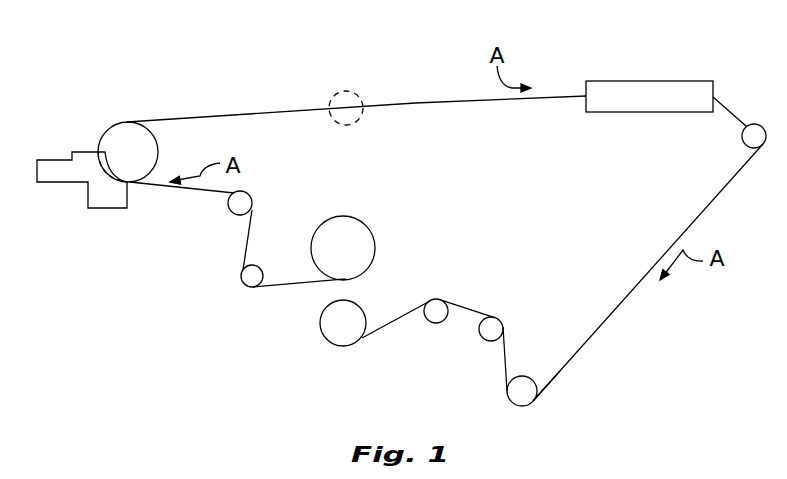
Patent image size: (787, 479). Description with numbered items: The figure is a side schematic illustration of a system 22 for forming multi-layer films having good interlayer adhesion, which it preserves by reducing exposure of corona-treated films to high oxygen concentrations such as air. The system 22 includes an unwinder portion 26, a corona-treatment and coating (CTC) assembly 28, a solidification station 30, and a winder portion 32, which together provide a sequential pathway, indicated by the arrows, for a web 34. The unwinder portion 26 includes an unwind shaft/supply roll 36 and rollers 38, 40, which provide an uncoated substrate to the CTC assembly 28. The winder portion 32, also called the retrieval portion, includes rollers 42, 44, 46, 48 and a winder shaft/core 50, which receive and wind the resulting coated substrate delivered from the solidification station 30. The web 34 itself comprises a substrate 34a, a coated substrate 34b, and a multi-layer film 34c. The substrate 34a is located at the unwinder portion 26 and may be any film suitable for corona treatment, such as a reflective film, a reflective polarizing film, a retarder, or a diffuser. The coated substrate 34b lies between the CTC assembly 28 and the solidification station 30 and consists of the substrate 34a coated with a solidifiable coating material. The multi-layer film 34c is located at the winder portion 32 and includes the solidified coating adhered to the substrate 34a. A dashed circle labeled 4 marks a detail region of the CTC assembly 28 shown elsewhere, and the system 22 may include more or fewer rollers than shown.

The system 22 is at (213, 60).
The corona-treatment and coating (CTC) assembly 28 is at (97, 125).
The detail region (FIG. 4) 4 is at (345, 93).
The web 34 is at (415, 101).
The substrate 34a is at (170, 190).
The coated substrate 34b is at (452, 105).
The multi-layer film 34c is at (618, 305).
The solidification station 30 is at (647, 81).
The roller 42 is at (742, 140).
The roller 40 is at (230, 210).
The roller 38 is at (262, 268).
The unwind shaft/supply roll 36 is at (375, 242).
The unwinder portion 26 is at (192, 266).
The winder shaft/core 50 is at (322, 340).
The roller 48 is at (437, 325).
The roller 46 is at (487, 337).
The roller 44 is at (525, 375).
The winder portion 32 is at (512, 430).